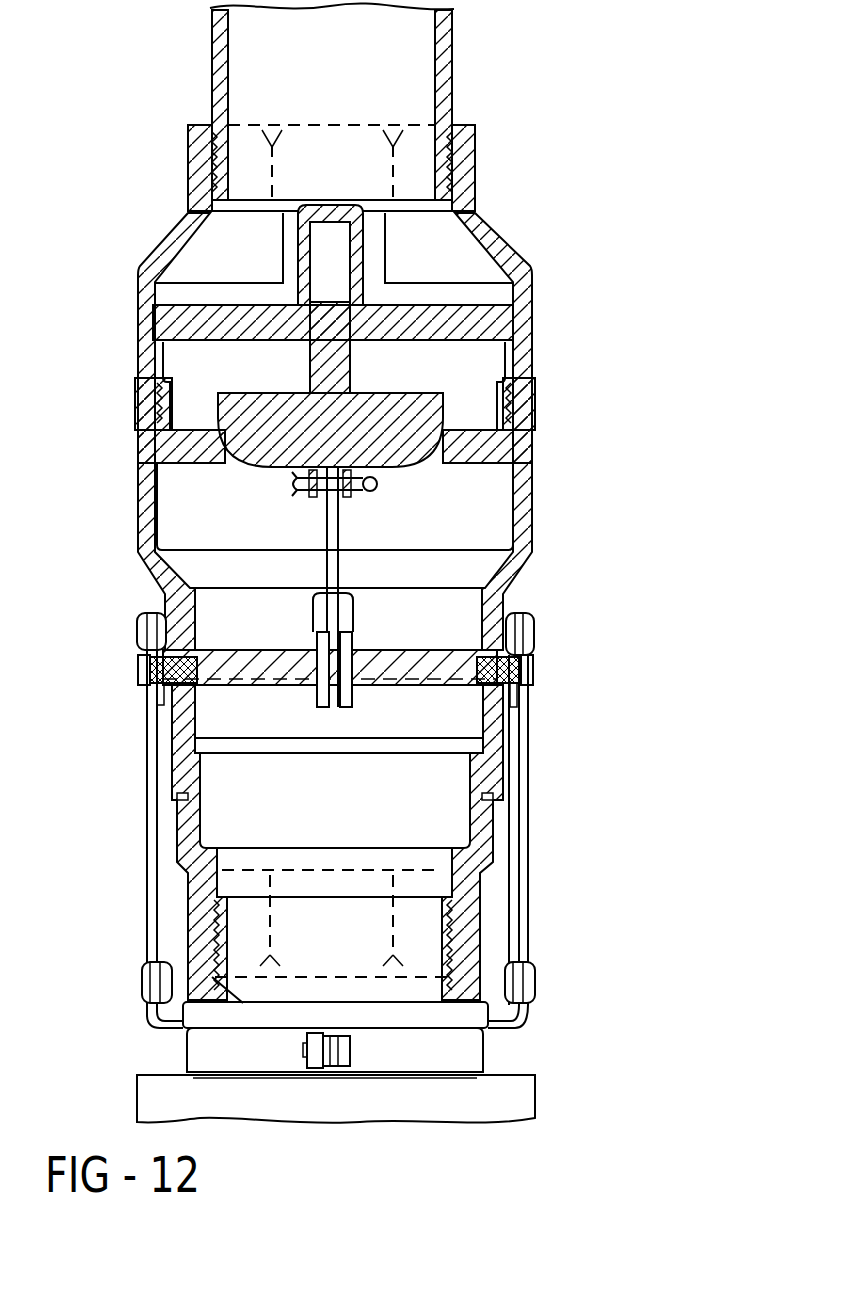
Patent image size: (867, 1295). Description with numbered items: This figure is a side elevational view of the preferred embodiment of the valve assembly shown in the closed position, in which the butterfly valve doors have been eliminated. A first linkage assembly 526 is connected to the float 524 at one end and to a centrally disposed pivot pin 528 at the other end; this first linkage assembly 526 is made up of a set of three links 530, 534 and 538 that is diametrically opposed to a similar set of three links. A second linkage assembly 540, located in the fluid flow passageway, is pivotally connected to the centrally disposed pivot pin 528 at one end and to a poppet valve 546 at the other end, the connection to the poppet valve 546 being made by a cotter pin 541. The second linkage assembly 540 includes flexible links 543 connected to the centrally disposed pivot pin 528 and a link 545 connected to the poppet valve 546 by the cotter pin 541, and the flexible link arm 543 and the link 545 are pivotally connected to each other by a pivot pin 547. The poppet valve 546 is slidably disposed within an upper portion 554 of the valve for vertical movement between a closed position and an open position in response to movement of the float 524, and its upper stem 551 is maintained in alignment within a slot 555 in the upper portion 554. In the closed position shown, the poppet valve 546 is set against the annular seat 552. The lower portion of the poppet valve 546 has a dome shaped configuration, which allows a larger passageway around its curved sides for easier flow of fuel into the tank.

The float 524 is at (538, 1075).
The first linkage assembly 526 is at (521, 800).
The centrally disposed pivot pin 528 is at (365, 688).
The link 530 is at (522, 1024).
The link 534 is at (522, 886).
The link 538 is at (527, 634).
The second linkage assembly 540 is at (342, 574).
The cotter pin 541 is at (362, 492).
The flexible links 543 is at (352, 648).
The link 545 is at (326, 530).
The poppet valve 546 is at (402, 467).
The pivot pin 547 is at (313, 600).
The upper stem 551 is at (370, 318).
The annular seat 552 is at (233, 456).
The upper portion 554 is at (487, 418).
The slot 555 is at (370, 245).